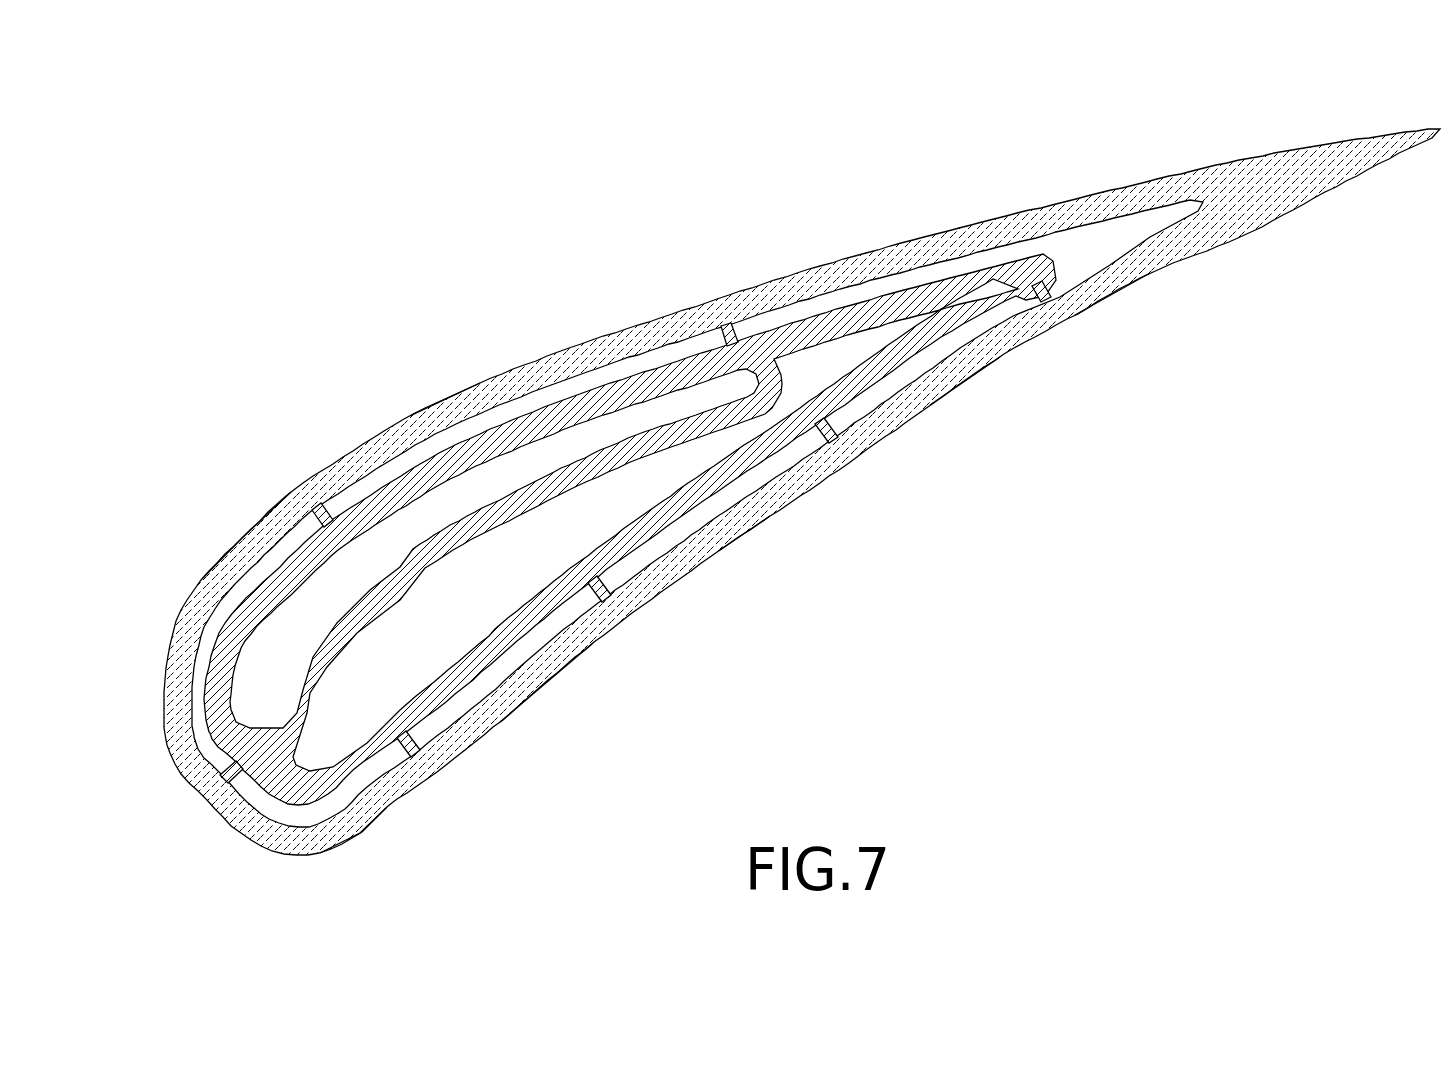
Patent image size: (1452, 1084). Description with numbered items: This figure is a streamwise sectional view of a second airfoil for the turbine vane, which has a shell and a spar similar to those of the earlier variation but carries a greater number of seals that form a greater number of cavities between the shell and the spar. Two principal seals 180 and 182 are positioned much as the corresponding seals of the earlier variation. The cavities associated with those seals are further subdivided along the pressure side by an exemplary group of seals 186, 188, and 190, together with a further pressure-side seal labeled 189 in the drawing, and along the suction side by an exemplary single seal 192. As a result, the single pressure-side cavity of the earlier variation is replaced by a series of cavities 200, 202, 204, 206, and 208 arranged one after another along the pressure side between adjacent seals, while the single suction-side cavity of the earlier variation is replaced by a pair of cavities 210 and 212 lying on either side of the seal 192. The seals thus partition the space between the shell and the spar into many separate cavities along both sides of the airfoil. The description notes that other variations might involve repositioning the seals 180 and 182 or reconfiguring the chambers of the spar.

The seal 180 is at (215, 796).
The seal 182 is at (735, 342).
The seal 186 is at (615, 600).
The seal 188 is at (828, 425).
The rib 189 is at (425, 762).
The seal 190 is at (1045, 286).
The seal 192 is at (318, 505).
The cavity 200 is at (345, 790).
The cavity 202 is at (512, 670).
The cavity 204 is at (700, 519).
The cavity 206 is at (925, 368).
The cavity 208 is at (1113, 238).
The cavity 210 is at (247, 573).
The cavity 212 is at (438, 442).